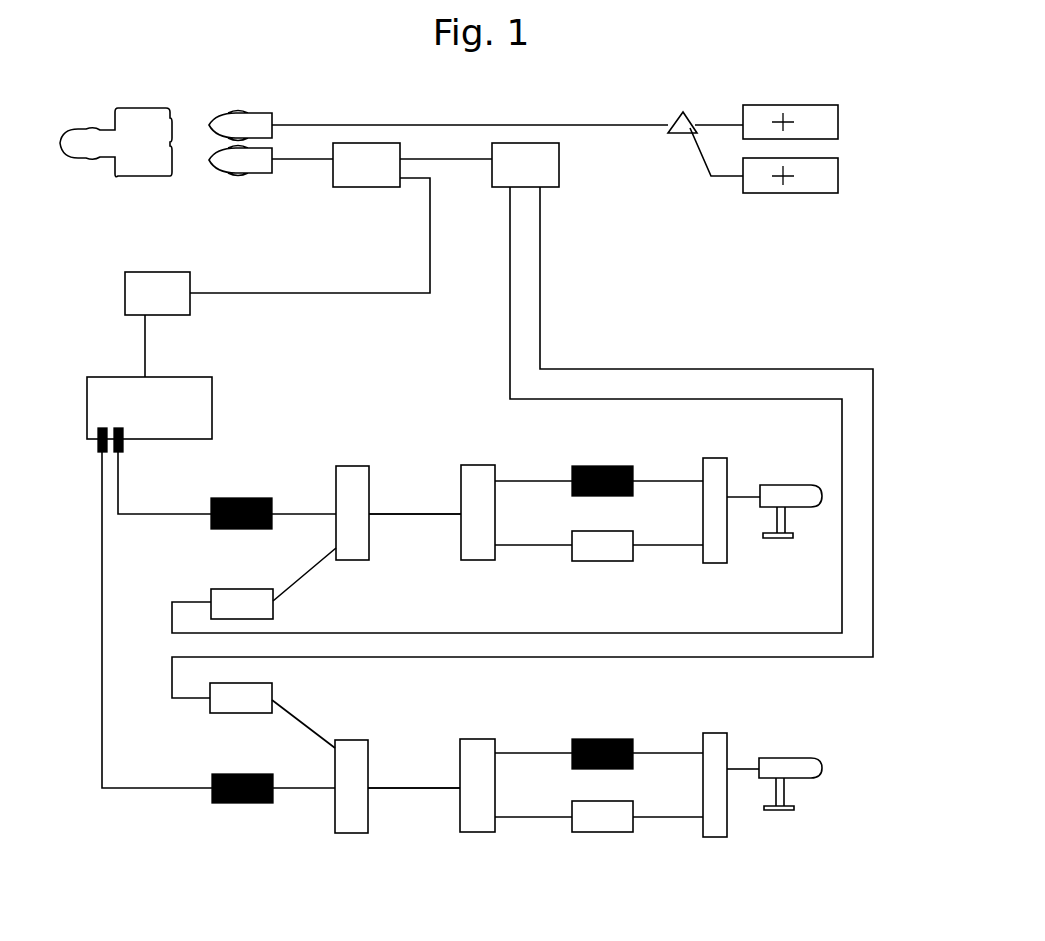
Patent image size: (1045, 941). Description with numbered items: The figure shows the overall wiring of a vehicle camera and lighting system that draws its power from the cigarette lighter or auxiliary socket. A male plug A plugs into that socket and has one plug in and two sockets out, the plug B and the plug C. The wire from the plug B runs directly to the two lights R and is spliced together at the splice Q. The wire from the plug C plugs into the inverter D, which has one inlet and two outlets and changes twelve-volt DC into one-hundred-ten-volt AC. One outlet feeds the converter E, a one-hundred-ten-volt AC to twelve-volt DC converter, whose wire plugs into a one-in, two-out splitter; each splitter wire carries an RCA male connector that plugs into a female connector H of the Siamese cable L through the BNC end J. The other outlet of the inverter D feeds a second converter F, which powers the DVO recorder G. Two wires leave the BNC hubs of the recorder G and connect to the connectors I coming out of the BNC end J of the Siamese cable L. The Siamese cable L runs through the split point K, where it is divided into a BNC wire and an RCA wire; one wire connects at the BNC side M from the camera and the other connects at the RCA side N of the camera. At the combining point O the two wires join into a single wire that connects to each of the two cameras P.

The male plug A is at (140, 108).
The plug B is at (240, 113).
The plug C is at (240, 174).
The inverter D is at (366, 166).
The 110V AC to 12V DC converter E is at (525, 166).
The 110V AC to 12V DC converter F is at (157, 294).
The DVO recorder G is at (149, 414).
The female RCA connector H is at (209, 588).
The BNC connector I is at (242, 497).
The BNC end of Siamese cable J is at (353, 465).
The split point of Siamese cable K is at (466, 461).
The Siamese cable L is at (416, 516).
The BNC side of camera M is at (579, 463).
The RCA side of camera N is at (580, 564).
The wire combining point O is at (704, 457).
The camera P is at (782, 484).
The splice Q is at (679, 114).
The light R is at (843, 138).